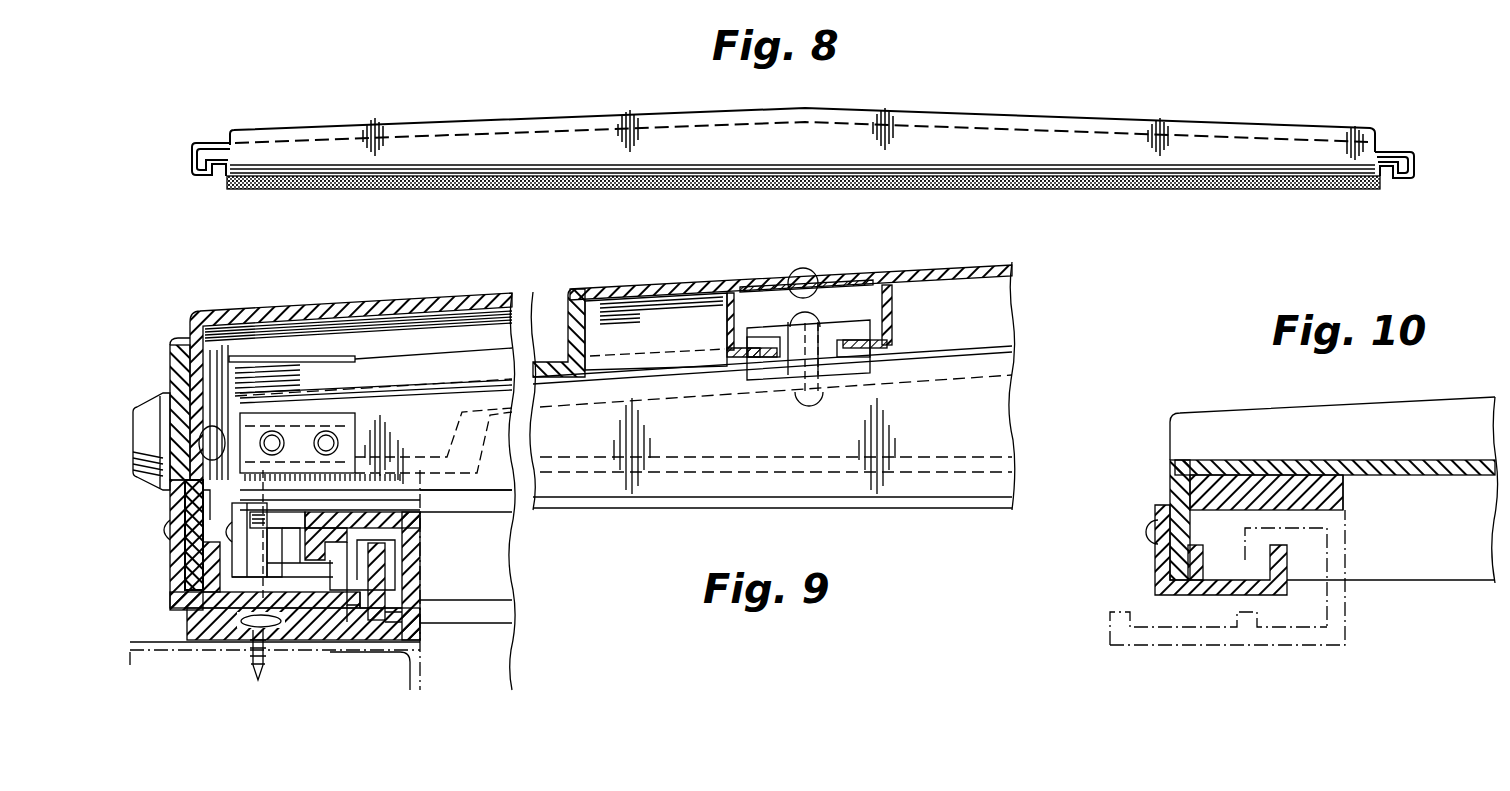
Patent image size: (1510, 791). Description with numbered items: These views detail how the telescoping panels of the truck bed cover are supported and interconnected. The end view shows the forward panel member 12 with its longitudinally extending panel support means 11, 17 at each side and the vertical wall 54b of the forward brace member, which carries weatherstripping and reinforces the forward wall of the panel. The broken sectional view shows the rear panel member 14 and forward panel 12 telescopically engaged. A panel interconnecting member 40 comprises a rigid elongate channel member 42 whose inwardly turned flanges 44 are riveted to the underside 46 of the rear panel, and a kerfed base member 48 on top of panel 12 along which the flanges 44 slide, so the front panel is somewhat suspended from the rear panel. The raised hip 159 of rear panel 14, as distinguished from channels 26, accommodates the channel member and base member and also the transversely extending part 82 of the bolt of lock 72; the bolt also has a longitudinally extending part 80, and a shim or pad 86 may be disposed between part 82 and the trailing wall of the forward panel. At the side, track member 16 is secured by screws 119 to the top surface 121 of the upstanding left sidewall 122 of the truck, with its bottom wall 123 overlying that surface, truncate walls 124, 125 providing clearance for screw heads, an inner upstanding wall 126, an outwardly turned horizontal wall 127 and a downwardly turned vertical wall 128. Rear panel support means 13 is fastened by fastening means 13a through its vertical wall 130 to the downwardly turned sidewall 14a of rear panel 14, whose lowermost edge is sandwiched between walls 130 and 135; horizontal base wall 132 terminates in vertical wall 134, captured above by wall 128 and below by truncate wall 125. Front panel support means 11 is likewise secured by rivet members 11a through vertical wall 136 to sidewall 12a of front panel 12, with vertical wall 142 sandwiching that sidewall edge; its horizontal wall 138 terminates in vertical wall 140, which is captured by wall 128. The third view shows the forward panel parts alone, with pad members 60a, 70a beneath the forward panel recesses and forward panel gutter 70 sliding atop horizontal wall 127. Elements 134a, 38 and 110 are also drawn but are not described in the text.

In FIG. 8, the front panel support means 11 is at (207, 183).
In FIG. 9, the front panel support means 11 is at (268, 578).
In FIG. 8, the forward panel member 12 is at (522, 108).
In FIG. 9, the forward panel member 12 is at (688, 386).
In FIG. 10, the forward panel member 12 is at (1238, 410).
In FIG. 8, the front panel support means 17 is at (1390, 185).
In FIG. 8, the vertical wall of forward brace member 54b is at (552, 191).
In FIG. 9, the rear panel member 14 is at (292, 306).
In FIG. 9, the sidewall of rear panel 14a is at (173, 372).
In FIG. 9, the raised hip 159 is at (437, 296).
In FIG. 9, the lock 72 is at (150, 396).
In FIG. 9, the longitudinally extending part of bolt 80 is at (262, 390).
In FIG. 9, the transversely extending part of bolt 82 is at (332, 355).
In FIG. 9, the shim or pad 86 is at (352, 440).
In FIG. 9, the outwardly turned horizontal wall of track member 127 is at (497, 500).
In FIG. 9, the downwardly turned vertical wall of track member 128 is at (385, 505).
In FIG. 9, the vertical wall of part 13 130 is at (172, 512).
In FIG. 9, the fastening means 13a is at (162, 530).
In FIG. 9, the rivet member 11a is at (228, 532).
In FIG. 9, the vertical wall of part 13 135 is at (192, 578).
In FIG. 9, the horizontal base wall 132 is at (178, 602).
In FIG. 9, the top surface of sidewall 121 is at (145, 640).
In FIG. 9, the truncate wall of track member 124 is at (192, 600).
In FIG. 10, the truncate wall of track member 124 is at (1108, 628).
In FIG. 9, the vertical wall of part 11 136 is at (205, 615).
In FIG. 10, the vertical wall of part 11 136 is at (1158, 570).
In FIG. 9, the vertical wall of part 11 142 is at (252, 628).
In FIG. 10, the vertical wall of part 11 142 is at (1212, 553).
In FIG. 9, the truncate wall of track member 125 is at (330, 612).
In FIG. 10, the truncate wall of track member 125 is at (1258, 620).
In FIG. 9, the transversely extending horizontal wall 138 is at (346, 612).
In FIG. 10, the transversely extending horizontal wall 138 is at (1218, 598).
In FIG. 9, the bottom wall of track member 123 is at (376, 636).
In FIG. 9, the left sidewall of pickup truck 122 is at (424, 672).
In FIG. 9, the sidewall of front panel 12a is at (248, 507).
In FIG. 10, the sidewall of front panel 12a is at (1172, 480).
In FIG. 9, the screw 119 is at (290, 590).
In FIG. 9, the rear panel support means 13 is at (412, 522).
In FIG. 9, the track member 16 is at (432, 548).
In FIG. 10, the track member 16 is at (1348, 624).
In FIG. 9, the vertical wall of part 11 140 is at (378, 566).
In FIG. 10, the vertical wall of part 11 140 is at (1285, 560).
In FIG. 9, the vertical wall of part 13 134 is at (388, 586).
In FIG. 9, the inner wall flange 134a is at (395, 622).
In FIG. 9, the inner upstanding wall of track member 126 is at (420, 606).
In FIG. 9, the channel 26 is at (565, 318).
In FIG. 9, the underside of rear panel member 46 is at (655, 300).
In FIG. 9, the panel interconnecting member 40 is at (908, 322).
In FIG. 9, the channel member 42 is at (895, 322).
In FIG. 9, the inwardly turned flange member 44 is at (762, 372).
In FIG. 9, the base member 48 is at (800, 365).
In FIG. 9, the panel line 38 is at (1010, 350).
In FIG. 9, the forward panel gutter 70 is at (760, 490).
In FIG. 10, the pad member 60a is at (1298, 462).
In FIG. 10, the pad member 70a is at (1266, 492).
In FIG. 10, the bead 110 is at (1150, 528).